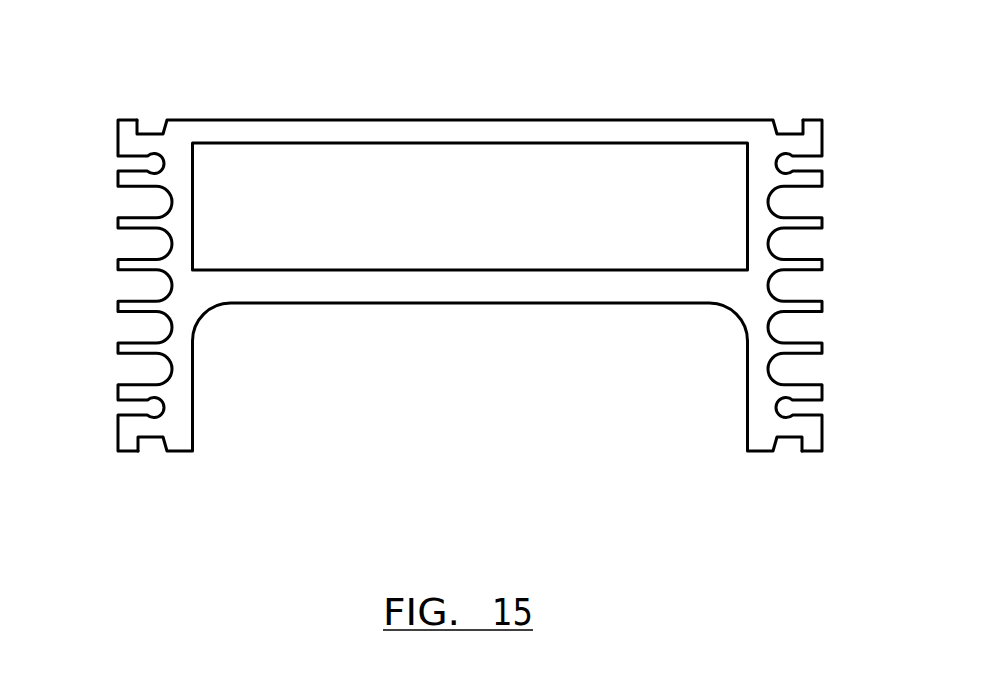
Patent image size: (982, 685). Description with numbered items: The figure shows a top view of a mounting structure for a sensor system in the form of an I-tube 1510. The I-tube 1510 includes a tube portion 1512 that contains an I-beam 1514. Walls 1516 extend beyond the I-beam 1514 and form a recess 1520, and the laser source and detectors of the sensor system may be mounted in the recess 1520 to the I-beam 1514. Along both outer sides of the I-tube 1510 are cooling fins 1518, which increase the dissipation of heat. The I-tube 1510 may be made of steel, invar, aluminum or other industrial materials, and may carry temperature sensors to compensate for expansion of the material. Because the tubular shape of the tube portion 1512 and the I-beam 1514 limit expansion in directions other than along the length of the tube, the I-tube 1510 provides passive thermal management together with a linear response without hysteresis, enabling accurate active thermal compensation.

The I-tube 1510 is at (465, 259).
The tube portion 1512 is at (281, 120).
The I-beam 1514 is at (488, 282).
The walls 1516 is at (185, 374).
The cooling fins 1518 is at (114, 242).
The recess 1520 is at (450, 438).